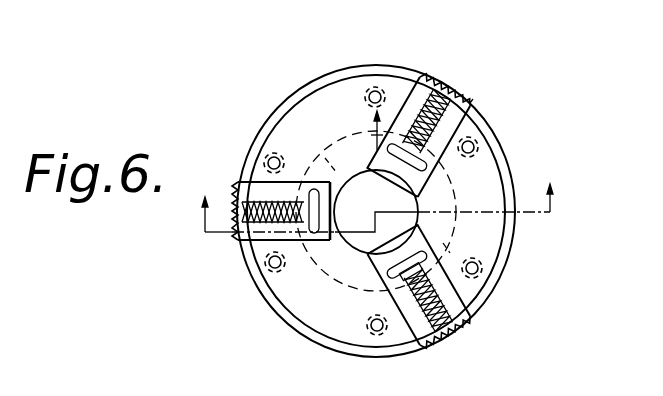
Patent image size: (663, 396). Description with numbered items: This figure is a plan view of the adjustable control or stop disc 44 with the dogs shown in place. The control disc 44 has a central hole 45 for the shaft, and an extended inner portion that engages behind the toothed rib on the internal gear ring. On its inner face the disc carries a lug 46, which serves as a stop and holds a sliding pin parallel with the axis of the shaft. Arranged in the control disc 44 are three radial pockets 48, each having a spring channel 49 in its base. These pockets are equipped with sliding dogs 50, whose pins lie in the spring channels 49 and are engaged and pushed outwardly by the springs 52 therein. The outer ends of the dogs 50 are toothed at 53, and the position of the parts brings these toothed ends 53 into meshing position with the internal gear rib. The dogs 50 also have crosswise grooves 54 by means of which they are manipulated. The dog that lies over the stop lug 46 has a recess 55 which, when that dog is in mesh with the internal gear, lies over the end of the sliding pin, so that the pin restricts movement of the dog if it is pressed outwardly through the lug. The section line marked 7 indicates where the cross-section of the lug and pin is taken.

The section line 7- 7 is at (378, 198).
The control disc 44 is at (516, 180).
The hole 45 is at (418, 207).
The lug 46 is at (327, 272).
The radial pockets 48 is at (374, 171).
The spring channels 49 is at (458, 84).
The sliding dogs 50 is at (413, 96).
The springs 52 is at (476, 99).
The toothed outer ends 53 is at (436, 78).
The crosswise grooves 54 is at (424, 160).
The recess 55 is at (322, 244).